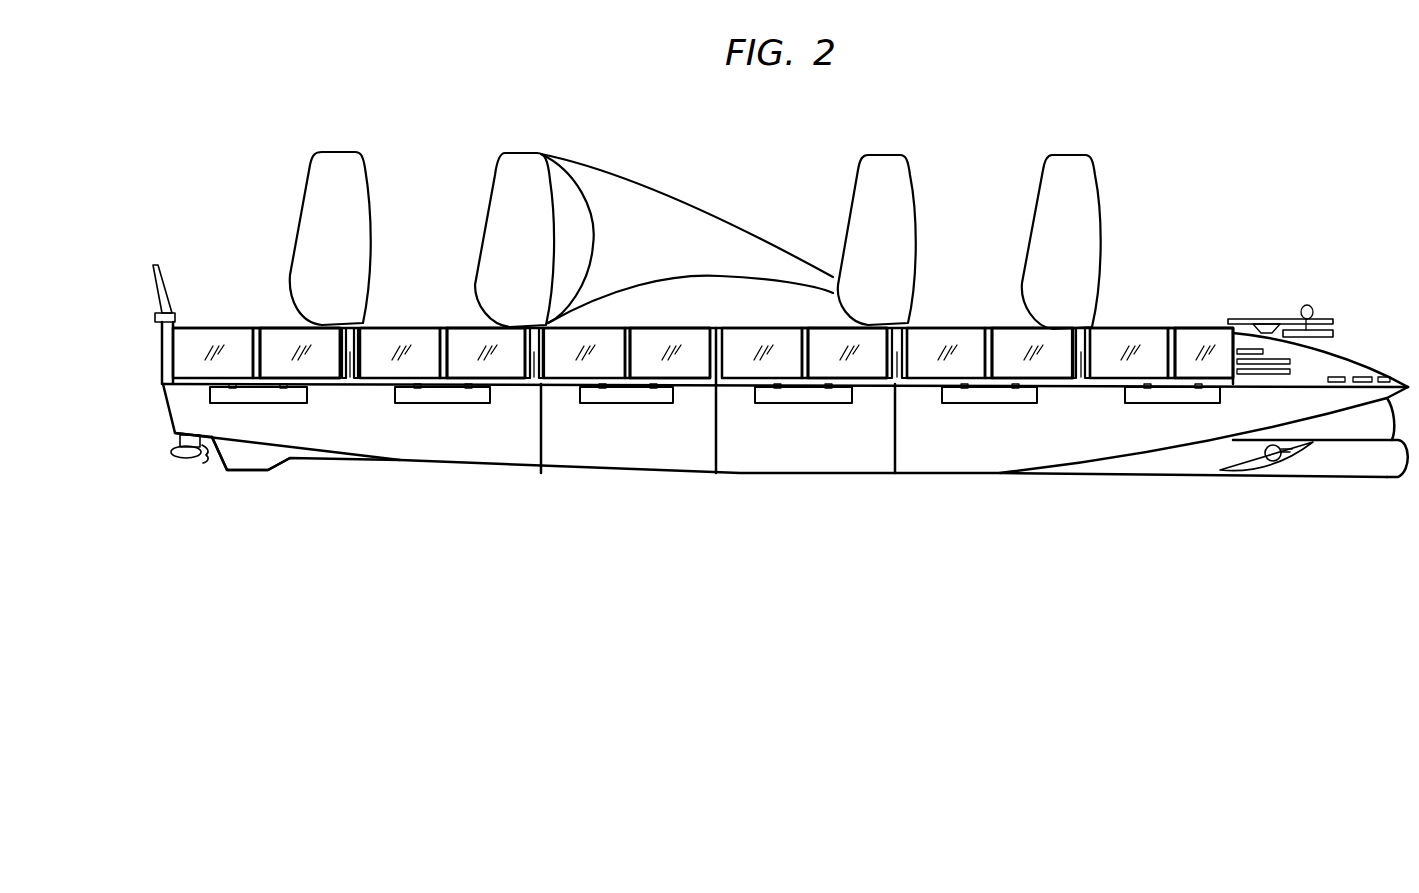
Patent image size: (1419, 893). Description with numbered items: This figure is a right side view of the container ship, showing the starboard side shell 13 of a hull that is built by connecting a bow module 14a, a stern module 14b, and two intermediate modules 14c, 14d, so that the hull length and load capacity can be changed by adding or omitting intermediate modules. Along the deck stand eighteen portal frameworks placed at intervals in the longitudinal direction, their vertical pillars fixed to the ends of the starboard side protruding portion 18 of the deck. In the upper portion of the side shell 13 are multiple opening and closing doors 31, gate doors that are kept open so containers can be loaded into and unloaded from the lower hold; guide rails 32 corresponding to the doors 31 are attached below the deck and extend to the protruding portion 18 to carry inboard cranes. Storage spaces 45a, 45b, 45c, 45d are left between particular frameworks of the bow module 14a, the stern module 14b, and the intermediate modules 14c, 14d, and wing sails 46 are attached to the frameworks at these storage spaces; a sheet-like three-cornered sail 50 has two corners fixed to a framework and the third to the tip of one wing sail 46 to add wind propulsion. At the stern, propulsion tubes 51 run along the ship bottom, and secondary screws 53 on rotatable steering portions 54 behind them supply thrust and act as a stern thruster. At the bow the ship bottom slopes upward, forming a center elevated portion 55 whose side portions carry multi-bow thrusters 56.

The starboard side shell 13 is at (1027, 445).
The bow module 14a is at (963, 452).
The stern module 14b is at (463, 448).
The intermediate module 14c is at (832, 452).
The intermediate module 14d is at (668, 452).
The starboard side protruding portion 18 is at (968, 372).
The opening and closing door 31 is at (242, 395).
The guide rail 32 is at (600, 390).
The storage space 45a is at (1080, 378).
The storage space 45b is at (350, 368).
The storage space 45c is at (898, 378).
The storage space 45d is at (535, 378).
The wing sail 46 is at (336, 185).
The three-cornered sail 50 is at (688, 218).
The propulsion tube 51 is at (259, 463).
The secondary screw 53 is at (208, 465).
The steering portion 54 is at (176, 438).
The center elevated portion 55 is at (1357, 455).
The multi-bow thruster 56 is at (1286, 478).